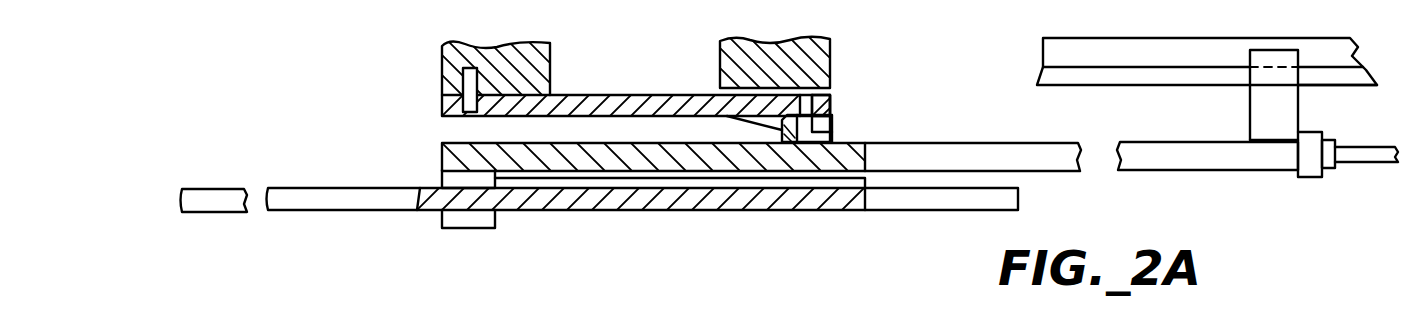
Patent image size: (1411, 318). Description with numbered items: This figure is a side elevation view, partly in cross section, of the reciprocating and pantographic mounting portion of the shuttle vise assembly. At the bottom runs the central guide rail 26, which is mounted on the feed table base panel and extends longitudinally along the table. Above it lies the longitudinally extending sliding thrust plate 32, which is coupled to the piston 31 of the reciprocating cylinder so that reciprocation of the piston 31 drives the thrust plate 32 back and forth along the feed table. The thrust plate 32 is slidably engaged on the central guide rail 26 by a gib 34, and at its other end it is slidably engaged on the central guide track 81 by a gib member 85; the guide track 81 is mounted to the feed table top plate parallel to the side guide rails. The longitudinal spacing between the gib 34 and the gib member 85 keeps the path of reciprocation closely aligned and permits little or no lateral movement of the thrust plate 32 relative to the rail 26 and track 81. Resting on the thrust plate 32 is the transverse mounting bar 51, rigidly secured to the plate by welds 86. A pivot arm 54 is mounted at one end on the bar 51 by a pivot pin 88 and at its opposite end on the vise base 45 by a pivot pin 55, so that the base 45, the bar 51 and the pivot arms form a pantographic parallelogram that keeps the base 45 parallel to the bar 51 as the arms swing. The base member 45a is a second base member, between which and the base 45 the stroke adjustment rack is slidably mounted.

The central guide rail 26 is at (332, 211).
The piston 31 is at (1375, 163).
The sliding thrust plate 32 is at (448, 145).
The gib 34 is at (468, 218).
The vise base 45 is at (442, 80).
The base member 45a is at (830, 60).
The transverse mounting bar 51 is at (642, 97).
The pivot arm 54 is at (717, 97).
The pivot pin 55 is at (470, 118).
The central guide track 81 is at (1155, 38).
The gib member 85 is at (1300, 130).
The weld 86 is at (767, 137).
The pivot pin 88 is at (807, 108).